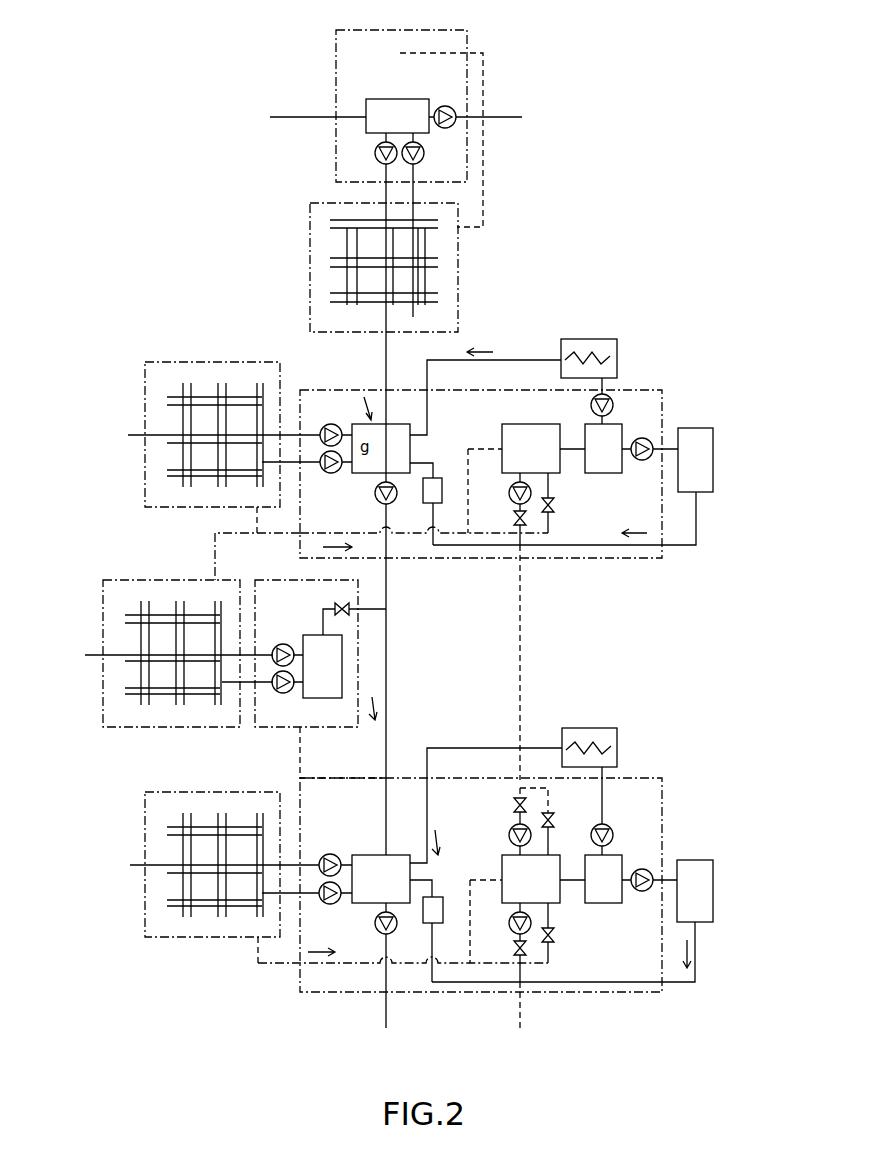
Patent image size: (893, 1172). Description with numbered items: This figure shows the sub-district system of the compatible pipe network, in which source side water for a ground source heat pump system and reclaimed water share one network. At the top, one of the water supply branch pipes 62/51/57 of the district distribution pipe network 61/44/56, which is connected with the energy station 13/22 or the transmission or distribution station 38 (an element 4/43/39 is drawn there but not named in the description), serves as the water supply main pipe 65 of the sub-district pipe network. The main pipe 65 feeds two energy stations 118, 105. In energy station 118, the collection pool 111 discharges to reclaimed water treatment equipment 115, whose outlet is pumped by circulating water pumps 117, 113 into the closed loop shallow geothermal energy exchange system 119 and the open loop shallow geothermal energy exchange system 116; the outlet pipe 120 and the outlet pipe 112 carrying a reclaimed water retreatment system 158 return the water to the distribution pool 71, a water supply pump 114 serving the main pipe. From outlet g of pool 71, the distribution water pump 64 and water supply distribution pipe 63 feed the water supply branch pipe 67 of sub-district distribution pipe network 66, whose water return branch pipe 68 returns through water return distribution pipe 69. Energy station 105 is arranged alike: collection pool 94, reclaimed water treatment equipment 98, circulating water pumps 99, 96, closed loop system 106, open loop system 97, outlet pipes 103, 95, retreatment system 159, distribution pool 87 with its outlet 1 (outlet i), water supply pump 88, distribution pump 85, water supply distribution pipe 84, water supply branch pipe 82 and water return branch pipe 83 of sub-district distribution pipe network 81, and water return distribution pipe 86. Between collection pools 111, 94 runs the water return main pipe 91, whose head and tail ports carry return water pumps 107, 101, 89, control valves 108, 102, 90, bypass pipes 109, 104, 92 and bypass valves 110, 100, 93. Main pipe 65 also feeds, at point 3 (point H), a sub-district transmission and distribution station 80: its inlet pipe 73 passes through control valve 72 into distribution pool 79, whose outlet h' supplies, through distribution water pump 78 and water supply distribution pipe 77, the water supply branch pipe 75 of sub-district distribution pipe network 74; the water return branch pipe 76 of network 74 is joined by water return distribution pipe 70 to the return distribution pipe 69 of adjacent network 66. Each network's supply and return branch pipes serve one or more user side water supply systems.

The energy station 13 is at (332, 125).
The energy station 22 is at (332, 125).
The transmission or distribution station 38 is at (337, 67).
The heat exchanger 4 is at (351, 190).
The heat exchanger 43 is at (351, 190).
The heat exchanger 39 is at (366, 110).
The distribution pipe network 61 is at (319, 245).
The distribution pipe network 44 is at (319, 245).
The distribution pipe network 56 is at (327, 203).
The water supply branch pipe 62 is at (309, 262).
The water supply branch pipe 51 is at (309, 262).
The water supply branch pipe 57 is at (347, 280).
The water supply distribution pipe 63 is at (310, 430).
The water supply pump 64 is at (332, 424).
The water supply main pipe 65 is at (386, 403).
The sub-district distribution pipe network 66 is at (145, 382).
The water supply branch pipe 67 is at (128, 437).
The water return branch pipe 68 is at (183, 452).
The water return distribution pipe 69 is at (257, 492).
The water return distribution pipe 70 is at (215, 545).
The distribution pool 71 is at (360, 473).
The control valve 72 is at (340, 606).
The inlet pipe 73 is at (322, 632).
The sub-district distribution pipe network 74 is at (103, 617).
The water supply branch pipe 75 is at (93, 655).
The water return branch pipe 76 is at (142, 672).
The water supply distribution pipe 77 is at (240, 687).
The water supply pump 78 is at (273, 690).
The distribution pool 79 is at (310, 698).
The sub-district transmission and distribution station 80 is at (327, 727).
The junction 3 is at (374, 610).
The sub-district distribution pipe network 81 is at (145, 830).
The water supply branch pipe 82 is at (130, 865).
The water return branch pipe 83 is at (183, 883).
The water supply distribution pipe 84 is at (307, 865).
The water supply pump 85 is at (337, 855).
The water return distribution pipe 86 is at (275, 950).
The distribution pool 87 is at (340, 938).
The heat exchanger 1 is at (363, 883).
The water supply pump 88 is at (377, 933).
The return water pump 89 is at (512, 930).
The control valve 90 is at (515, 947).
The water return main pipe 91 is at (520, 642).
The bypass pipe 92 is at (550, 937).
The bypass valve 93 is at (560, 903).
The collection pool 94 is at (562, 893).
The outlet pipe 95 is at (695, 968).
The circulating water pump 96 is at (647, 888).
The open loop shallow geothermal energy exchange system 97 is at (688, 857).
The reclaimed water treatment equipment 98 is at (622, 858).
The circulating water pump 99 is at (607, 830).
The bypass valve 100 is at (552, 820).
The return water pump 101 is at (510, 832).
The control valve 102 is at (517, 800).
The outlet pipe 103 is at (458, 747).
The bypass pipe 104 is at (530, 787).
The energy station 105 is at (625, 780).
The closed loop shallow geothermal energy exchange system 106 is at (618, 733).
The return water pump 107 is at (508, 488).
The control valve 108 is at (515, 520).
The bypass pipe 109 is at (535, 532).
The bypass valve 110 is at (552, 512).
The collection pool 111 is at (561, 475).
The outlet pipe 112 is at (697, 523).
The circulating water pump 113 is at (642, 460).
The water supply pump 114 is at (413, 468).
The reclaimed water treatment equipment 115 is at (623, 427).
The open loop shallow geothermal energy exchange system 116 is at (697, 428).
The circulating water pump 117 is at (612, 410).
The energy station 118 is at (662, 422).
The closed loop shallow geothermal energy exchange system 119 is at (618, 347).
The outlet pipe 120 is at (527, 360).
The reclaimed water retreatment system 158 is at (393, 500).
The reclaimed water retreatment system 159 is at (440, 897).